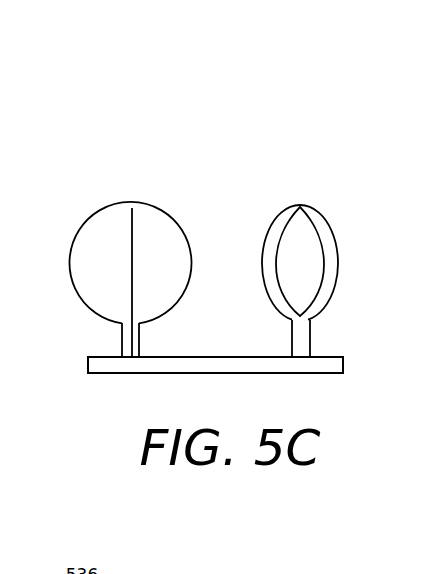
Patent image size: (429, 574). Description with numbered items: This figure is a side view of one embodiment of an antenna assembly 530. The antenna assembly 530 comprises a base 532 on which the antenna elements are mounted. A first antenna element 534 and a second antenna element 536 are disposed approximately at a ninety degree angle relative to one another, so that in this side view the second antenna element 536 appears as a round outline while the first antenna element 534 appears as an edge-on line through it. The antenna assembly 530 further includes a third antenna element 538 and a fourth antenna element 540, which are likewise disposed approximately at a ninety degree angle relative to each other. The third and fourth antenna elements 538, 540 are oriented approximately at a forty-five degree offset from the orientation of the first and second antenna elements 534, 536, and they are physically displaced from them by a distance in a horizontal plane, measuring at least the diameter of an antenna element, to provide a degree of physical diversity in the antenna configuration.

The antenna assembly 530 is at (232, 145).
The base 532 is at (343, 364).
The first antenna element 534 is at (138, 204).
The second antenna element 536 is at (128, 235).
The third antenna element 538 is at (317, 232).
The fourth antenna element 540 is at (300, 205).